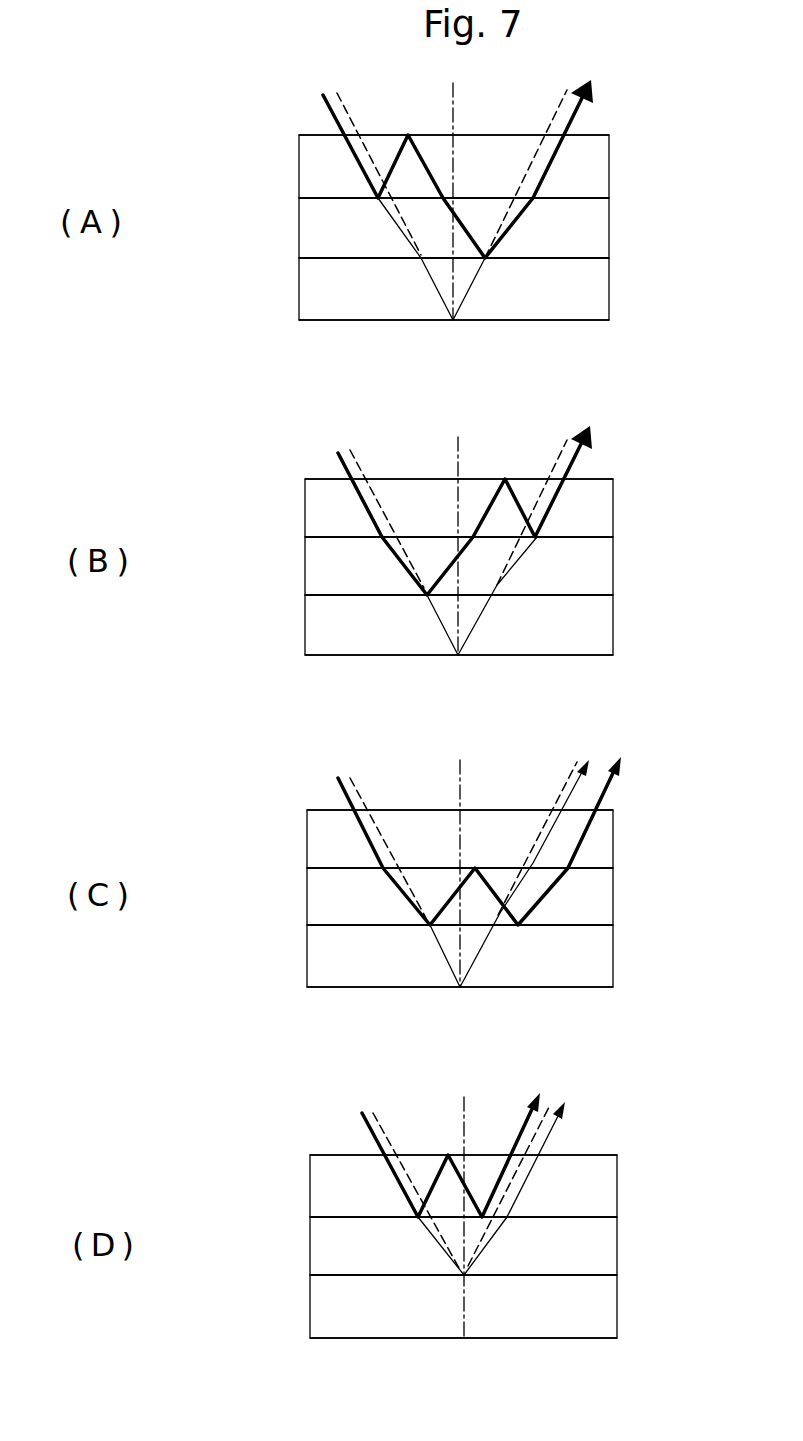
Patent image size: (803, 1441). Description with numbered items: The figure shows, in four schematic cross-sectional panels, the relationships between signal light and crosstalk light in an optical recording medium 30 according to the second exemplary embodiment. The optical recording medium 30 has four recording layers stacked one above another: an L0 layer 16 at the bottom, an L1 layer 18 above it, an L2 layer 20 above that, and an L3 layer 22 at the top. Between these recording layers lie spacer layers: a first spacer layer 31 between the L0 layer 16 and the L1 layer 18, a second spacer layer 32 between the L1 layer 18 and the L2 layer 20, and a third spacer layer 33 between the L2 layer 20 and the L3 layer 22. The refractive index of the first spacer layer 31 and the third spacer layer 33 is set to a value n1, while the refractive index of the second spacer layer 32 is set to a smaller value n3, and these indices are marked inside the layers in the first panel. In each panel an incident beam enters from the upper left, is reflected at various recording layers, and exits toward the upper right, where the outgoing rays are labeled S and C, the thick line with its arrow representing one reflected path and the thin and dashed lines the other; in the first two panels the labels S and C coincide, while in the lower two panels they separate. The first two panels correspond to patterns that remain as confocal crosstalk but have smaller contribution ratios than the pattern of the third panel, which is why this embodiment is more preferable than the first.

The optical recording medium 30 is at (203, 131).
The L3 layer 22 is at (322, 135).
The L2 layer 20 is at (324, 198).
The L1 layer 18 is at (324, 258).
The L0 layer 16 is at (324, 320).
The third spacer layer 33 is at (596, 164).
The second spacer layer 32 is at (596, 208).
The first spacer layer 31 is at (596, 281).
The sub beam S is at (572, 778).
The main beam C is at (578, 122).